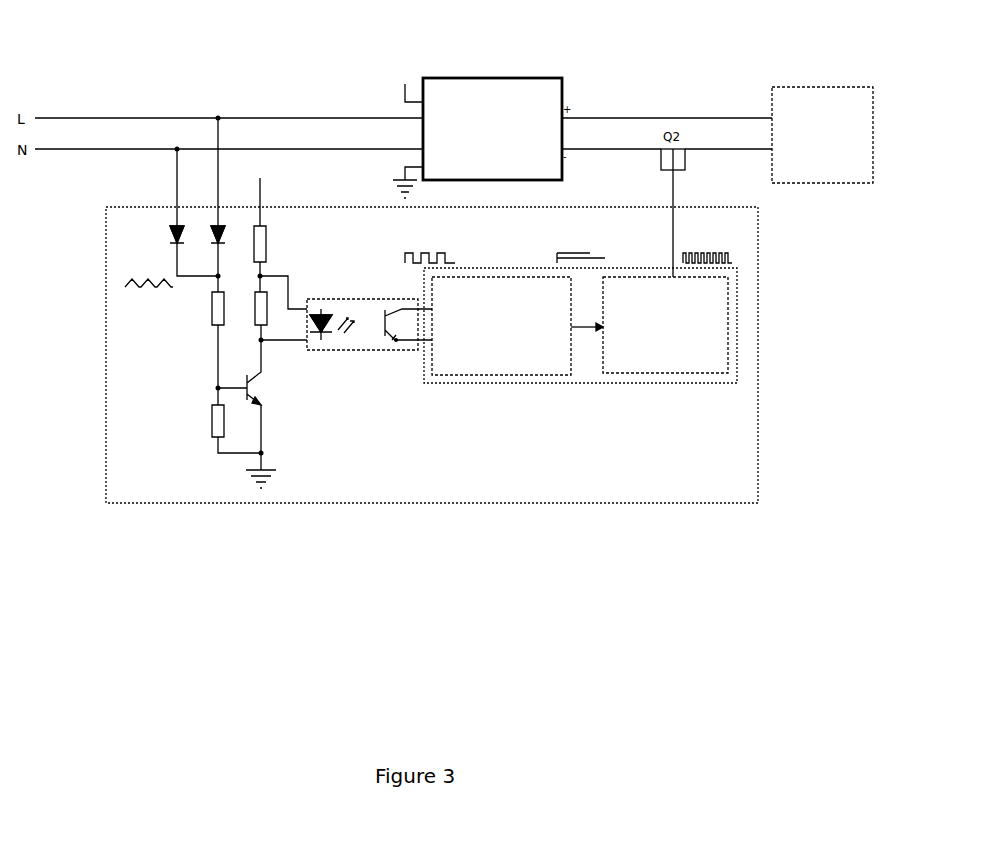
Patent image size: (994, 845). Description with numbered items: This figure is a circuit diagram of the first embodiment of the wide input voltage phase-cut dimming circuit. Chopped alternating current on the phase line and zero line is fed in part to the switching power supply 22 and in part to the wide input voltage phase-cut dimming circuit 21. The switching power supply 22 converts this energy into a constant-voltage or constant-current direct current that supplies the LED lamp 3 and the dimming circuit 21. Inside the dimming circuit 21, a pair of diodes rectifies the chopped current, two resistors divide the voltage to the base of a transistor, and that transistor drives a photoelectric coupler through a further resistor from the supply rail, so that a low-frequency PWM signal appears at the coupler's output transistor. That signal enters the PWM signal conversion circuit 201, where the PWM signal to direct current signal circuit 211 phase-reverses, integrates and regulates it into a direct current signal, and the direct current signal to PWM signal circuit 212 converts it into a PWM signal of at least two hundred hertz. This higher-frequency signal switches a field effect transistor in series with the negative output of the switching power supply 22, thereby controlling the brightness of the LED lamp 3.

The LED lamp 3 is at (822, 86).
The switching power supply 22 is at (494, 78).
The wide input voltage phase-cut dimming circuit 21 is at (427, 505).
The PWM signal conversion circuit 201 is at (583, 383).
The PWM signal to direct current signal circuit 211 is at (492, 375).
The direct current signal to PWM signal circuit 212 is at (664, 373).